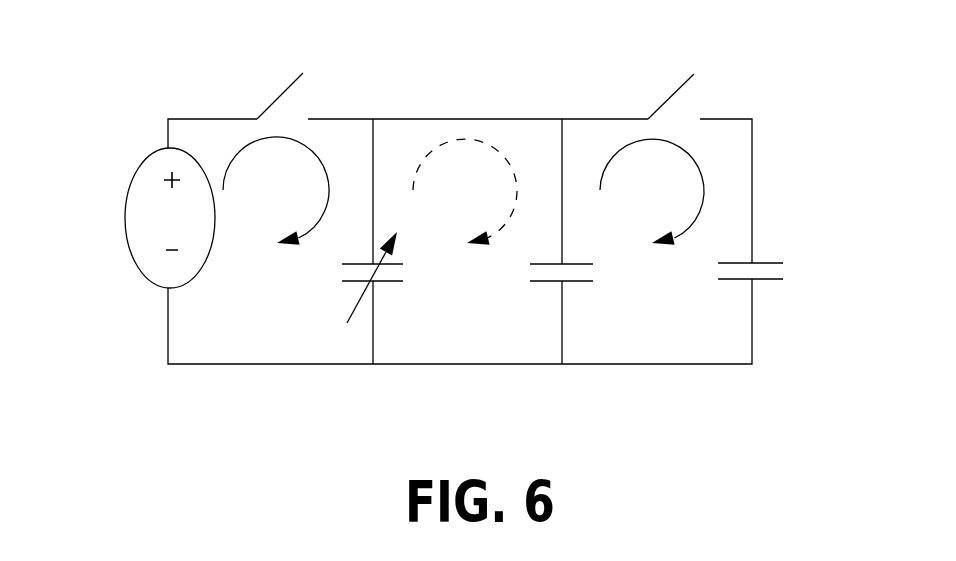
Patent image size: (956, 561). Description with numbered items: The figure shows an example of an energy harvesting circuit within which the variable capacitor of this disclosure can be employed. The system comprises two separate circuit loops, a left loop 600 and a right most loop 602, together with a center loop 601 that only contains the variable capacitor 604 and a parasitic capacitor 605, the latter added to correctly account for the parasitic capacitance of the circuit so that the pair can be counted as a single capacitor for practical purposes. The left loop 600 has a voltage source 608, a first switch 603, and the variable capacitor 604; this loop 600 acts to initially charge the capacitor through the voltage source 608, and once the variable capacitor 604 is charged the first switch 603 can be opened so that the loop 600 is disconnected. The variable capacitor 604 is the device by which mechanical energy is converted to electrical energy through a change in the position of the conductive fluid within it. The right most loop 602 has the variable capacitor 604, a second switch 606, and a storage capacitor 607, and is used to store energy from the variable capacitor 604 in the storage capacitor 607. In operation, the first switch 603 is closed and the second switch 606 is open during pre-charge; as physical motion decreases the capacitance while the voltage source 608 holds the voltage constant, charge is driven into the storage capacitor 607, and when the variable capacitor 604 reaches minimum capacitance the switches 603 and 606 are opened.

The left loop 600 is at (276, 191).
The center loop 601 is at (465, 192).
The right most loop 602 is at (652, 192).
The first switch 603 is at (248, 80).
The variable capacitor 604 is at (323, 314).
The parasitic capacitor 605 is at (510, 312).
The second switch 606 is at (645, 88).
The storage capacitor 607 is at (800, 305).
The voltage source 608 is at (134, 254).